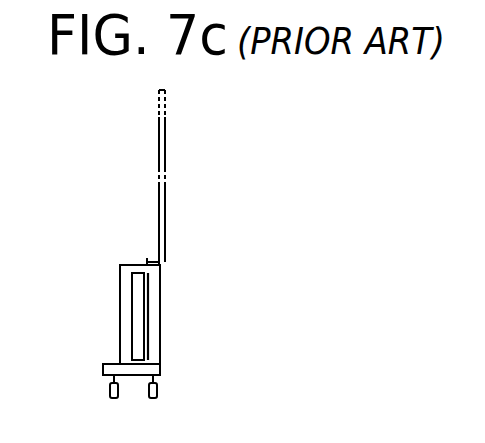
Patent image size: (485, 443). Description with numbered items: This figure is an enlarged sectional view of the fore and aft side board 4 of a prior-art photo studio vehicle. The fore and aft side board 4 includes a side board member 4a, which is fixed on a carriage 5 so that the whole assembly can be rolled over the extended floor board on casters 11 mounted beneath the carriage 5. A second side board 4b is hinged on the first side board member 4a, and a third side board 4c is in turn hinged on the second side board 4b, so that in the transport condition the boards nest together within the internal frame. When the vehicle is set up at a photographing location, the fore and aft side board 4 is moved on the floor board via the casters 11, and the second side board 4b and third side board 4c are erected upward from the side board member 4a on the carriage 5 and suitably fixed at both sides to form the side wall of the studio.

The fore and aft side board 4 is at (160, 338).
The side board member 4a is at (160, 271).
The second side board 4b is at (165, 199).
The third side board 4c is at (165, 131).
The carriage 5 is at (160, 368).
The casters 11 is at (158, 392).